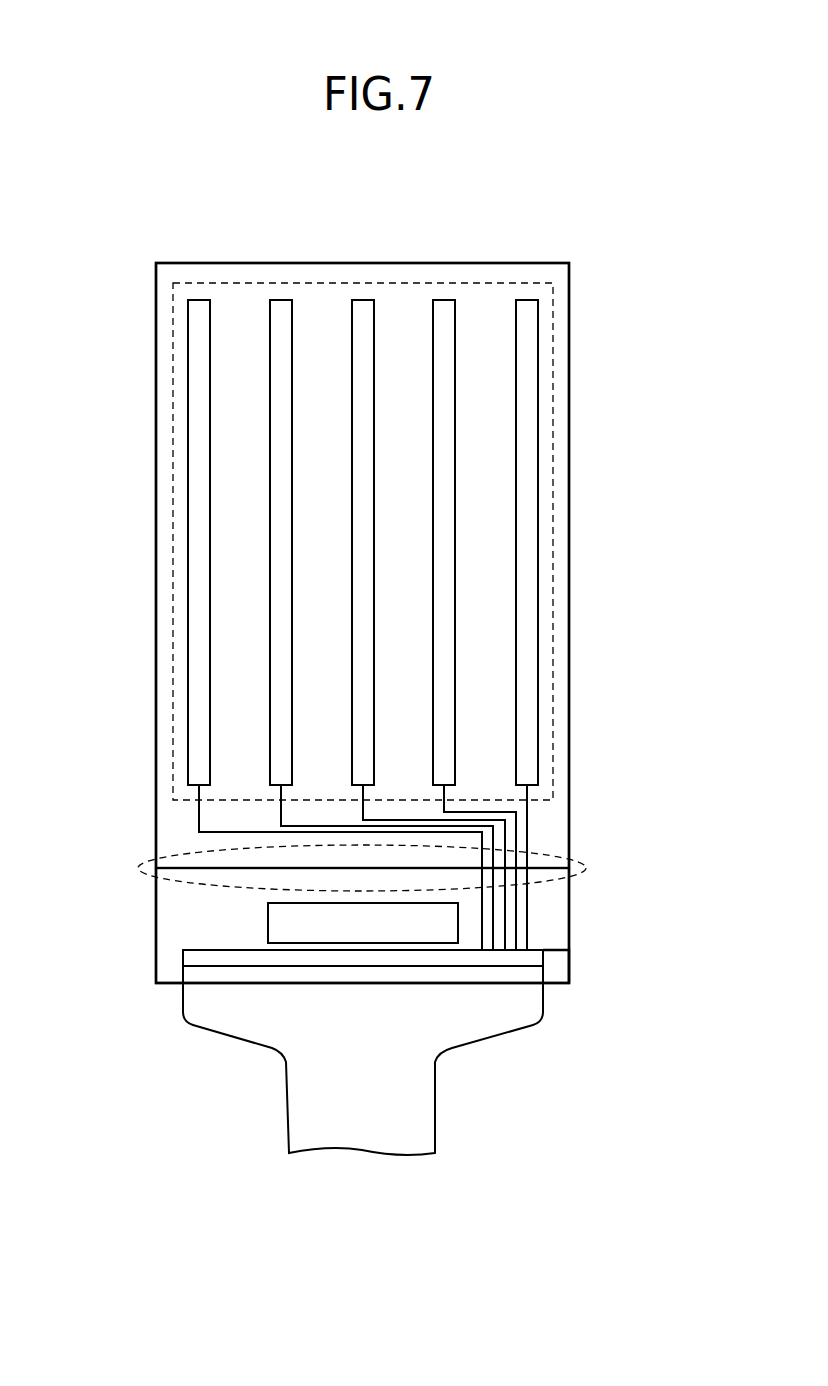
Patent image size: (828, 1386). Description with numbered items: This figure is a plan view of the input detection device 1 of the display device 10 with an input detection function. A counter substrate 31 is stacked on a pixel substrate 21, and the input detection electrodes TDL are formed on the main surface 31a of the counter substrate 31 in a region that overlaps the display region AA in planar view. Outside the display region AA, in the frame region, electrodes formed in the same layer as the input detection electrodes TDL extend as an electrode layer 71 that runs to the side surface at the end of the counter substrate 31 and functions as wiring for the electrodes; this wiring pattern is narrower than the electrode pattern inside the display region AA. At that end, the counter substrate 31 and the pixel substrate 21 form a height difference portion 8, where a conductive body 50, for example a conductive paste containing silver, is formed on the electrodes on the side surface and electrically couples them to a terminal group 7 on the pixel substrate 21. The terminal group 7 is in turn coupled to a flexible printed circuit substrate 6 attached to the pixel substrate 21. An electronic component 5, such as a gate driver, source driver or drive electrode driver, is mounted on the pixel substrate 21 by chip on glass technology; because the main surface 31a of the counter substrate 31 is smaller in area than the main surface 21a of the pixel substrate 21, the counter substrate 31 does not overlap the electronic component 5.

The display device with touch detection function 1 is at (102, 212).
The display device with an input detection function 10 is at (613, 703).
The pixel substrate 21 is at (557, 932).
The main surface of the pixel substrate 21a is at (552, 950).
The counter substrate 31 is at (557, 555).
The main surface of the counter substrate 31a is at (542, 647).
The display region AA is at (553, 412).
The input detection electrodes TDL is at (277, 308).
The electrode layer 71 is at (195, 613).
The conductive body 50 is at (535, 892).
The height difference portion 8 is at (140, 866).
The electronic component 5 is at (273, 925).
The terminal group 7 is at (190, 958).
The flexible printed circuit (FPC) substrate 6 is at (427, 1105).